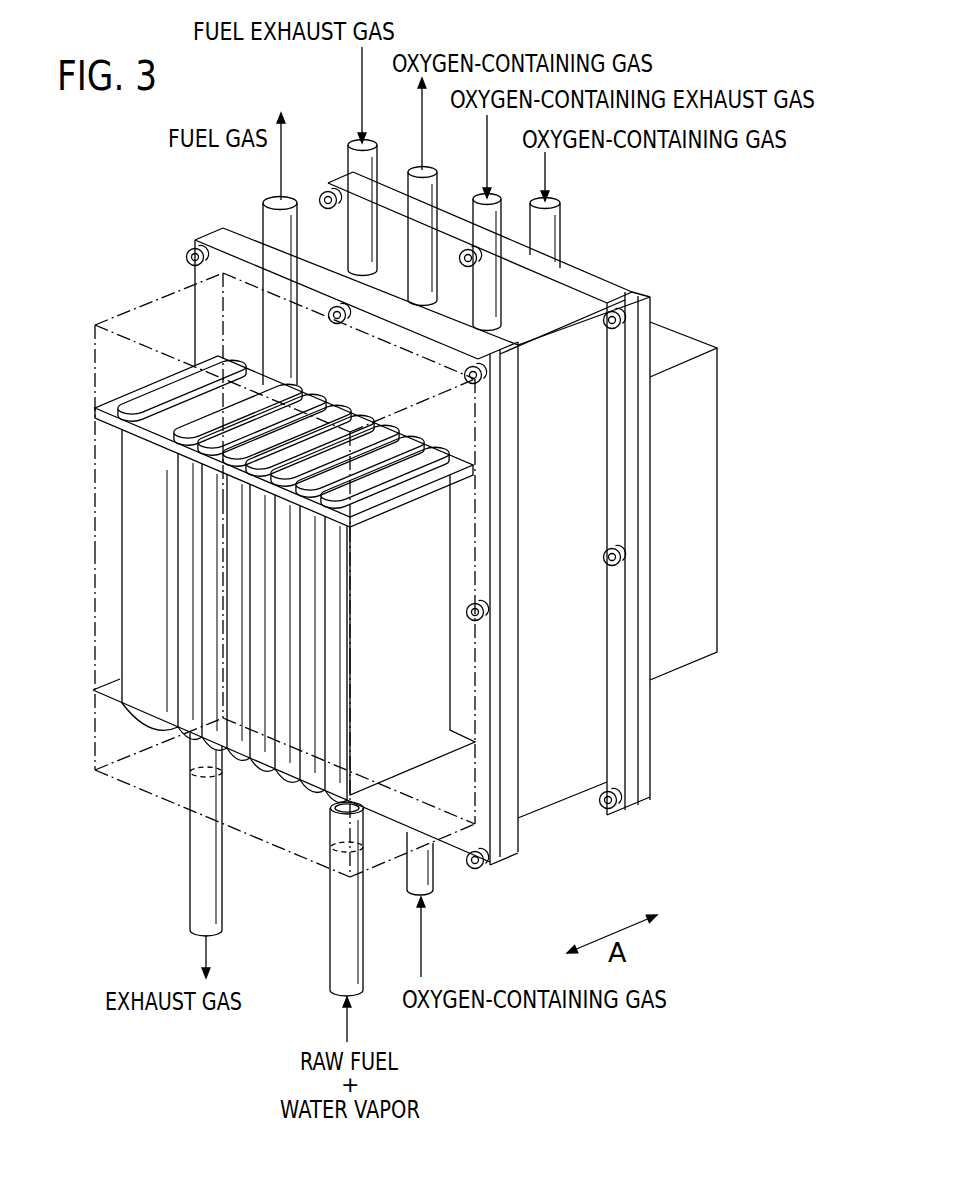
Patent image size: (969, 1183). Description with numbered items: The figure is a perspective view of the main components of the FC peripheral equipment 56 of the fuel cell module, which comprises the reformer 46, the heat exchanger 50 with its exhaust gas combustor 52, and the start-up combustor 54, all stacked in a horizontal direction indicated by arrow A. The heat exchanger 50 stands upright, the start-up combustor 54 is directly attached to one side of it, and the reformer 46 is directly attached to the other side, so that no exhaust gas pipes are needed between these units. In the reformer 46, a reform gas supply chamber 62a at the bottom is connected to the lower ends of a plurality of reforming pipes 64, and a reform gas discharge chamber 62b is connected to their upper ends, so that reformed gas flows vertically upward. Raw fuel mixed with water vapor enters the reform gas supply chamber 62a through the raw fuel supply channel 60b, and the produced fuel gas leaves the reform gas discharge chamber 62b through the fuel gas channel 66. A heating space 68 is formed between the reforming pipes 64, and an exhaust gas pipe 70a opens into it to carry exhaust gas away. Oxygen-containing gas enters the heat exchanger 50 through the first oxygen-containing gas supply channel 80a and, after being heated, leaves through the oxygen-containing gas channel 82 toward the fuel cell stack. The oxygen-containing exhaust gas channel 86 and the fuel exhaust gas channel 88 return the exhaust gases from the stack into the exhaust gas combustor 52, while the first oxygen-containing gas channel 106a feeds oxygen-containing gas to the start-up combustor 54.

The FC peripheral equipment 56 is at (92, 171).
The reformer 46 is at (438, 797).
The heat exchanger 50 is at (567, 740).
The exhaust gas combustor 52 is at (485, 514).
The start-up combustor 54 is at (716, 585).
The raw fuel supply channel 60b is at (337, 915).
The reform gas supply chamber 62a is at (147, 777).
The reform gas discharge chamber 62b is at (196, 406).
The reforming pipes 64 is at (197, 667).
The fuel gas channel 66 is at (270, 221).
The heating space 68 is at (160, 592).
The exhaust gas pipe 70a is at (190, 892).
The first oxygen-containing gas supply channel 80a is at (408, 875).
The oxygen-containing gas channel 82 is at (433, 272).
The oxygen-containing exhaust gas channel 86 is at (498, 298).
The fuel exhaust gas channel 88 is at (375, 247).
The first oxygen-containing gas channel 106a is at (543, 230).